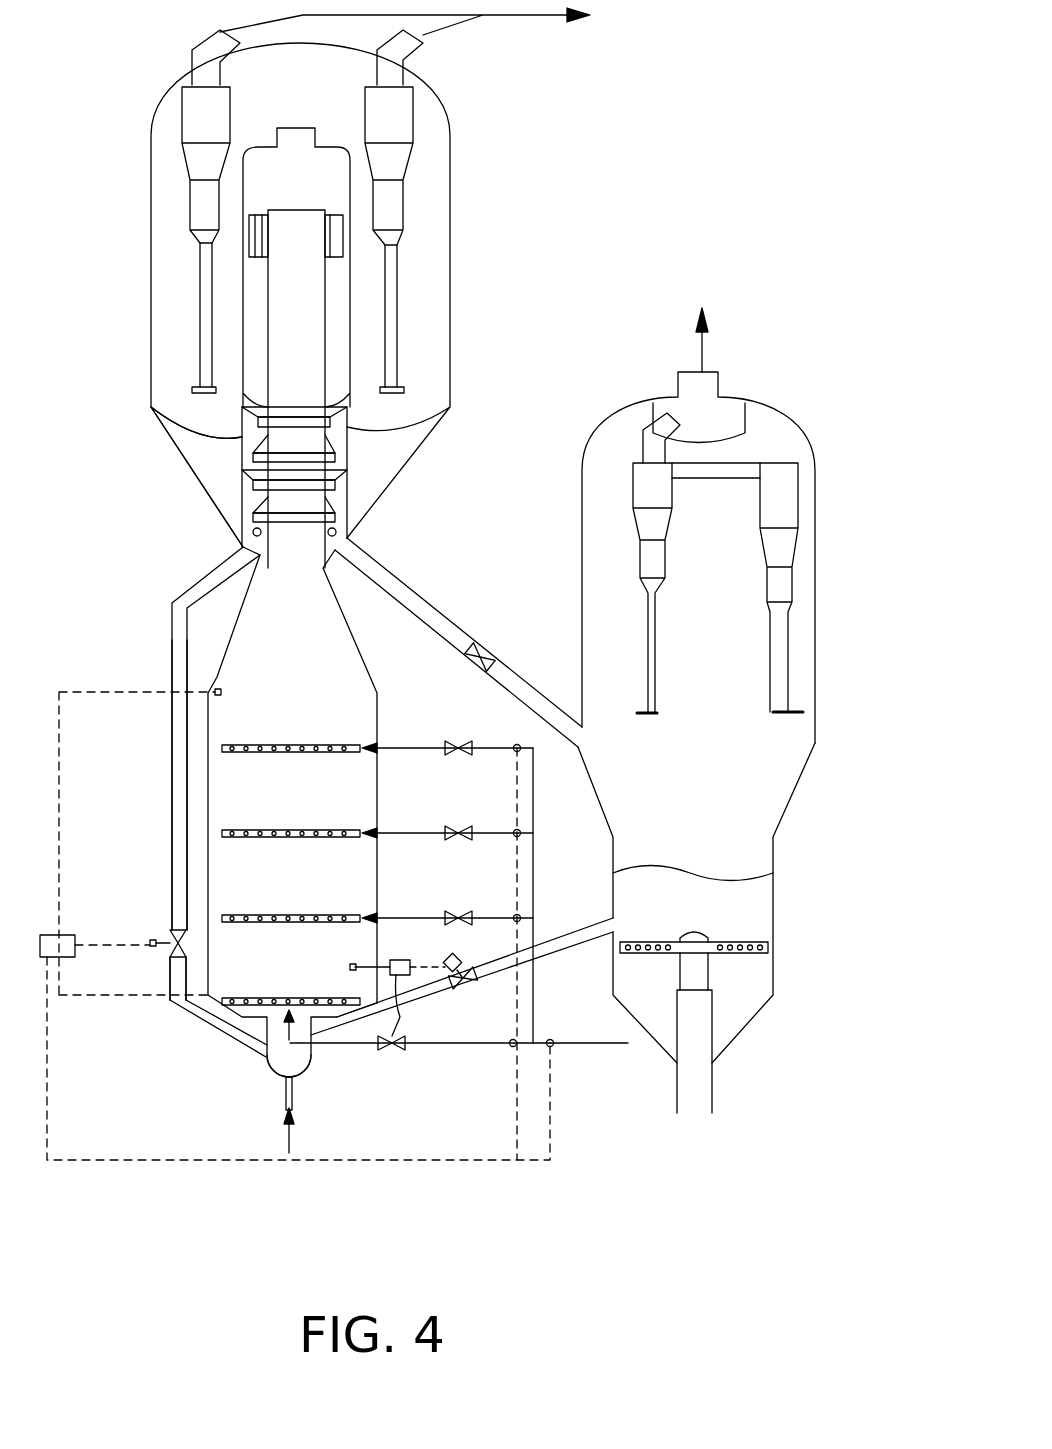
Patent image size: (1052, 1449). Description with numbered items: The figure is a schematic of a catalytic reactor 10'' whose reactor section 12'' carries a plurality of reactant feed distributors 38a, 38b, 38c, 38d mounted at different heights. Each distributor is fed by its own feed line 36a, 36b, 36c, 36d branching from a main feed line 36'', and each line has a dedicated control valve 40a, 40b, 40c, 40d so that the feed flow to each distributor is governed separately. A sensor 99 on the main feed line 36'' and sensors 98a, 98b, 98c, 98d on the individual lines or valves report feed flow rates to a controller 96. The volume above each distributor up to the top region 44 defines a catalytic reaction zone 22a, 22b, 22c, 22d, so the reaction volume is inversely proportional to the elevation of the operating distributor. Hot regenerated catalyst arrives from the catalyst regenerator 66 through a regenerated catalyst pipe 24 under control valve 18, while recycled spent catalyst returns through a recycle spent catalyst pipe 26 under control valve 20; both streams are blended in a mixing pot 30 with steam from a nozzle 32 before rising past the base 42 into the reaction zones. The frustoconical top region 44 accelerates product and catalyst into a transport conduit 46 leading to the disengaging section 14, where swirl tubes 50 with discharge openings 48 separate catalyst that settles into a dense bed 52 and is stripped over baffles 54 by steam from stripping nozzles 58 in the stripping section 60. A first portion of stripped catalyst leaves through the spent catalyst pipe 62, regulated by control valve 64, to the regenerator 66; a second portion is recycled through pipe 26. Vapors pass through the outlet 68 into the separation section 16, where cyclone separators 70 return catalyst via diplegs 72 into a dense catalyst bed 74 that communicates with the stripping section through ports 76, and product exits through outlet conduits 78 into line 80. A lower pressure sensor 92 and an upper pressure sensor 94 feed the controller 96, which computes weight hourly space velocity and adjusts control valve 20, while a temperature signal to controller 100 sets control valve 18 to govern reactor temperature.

The catalytic reactor 10'' is at (124, 550).
The reactor section 12'' is at (222, 812).
The disengaging section 14 is at (337, 338).
The separation section 16 is at (432, 188).
The control valve 18 is at (456, 956).
The control valve 20 is at (173, 943).
The catalytic reaction zone 22a is at (288, 963).
The catalytic reaction zone 22b is at (288, 872).
The catalytic reaction zone 22c is at (283, 807).
The catalytic reaction zone 22d is at (292, 728).
The regenerated catalyst pipe 24 is at (562, 938).
The recycle spent catalyst pipe 26 is at (180, 747).
The mixing pot 30 is at (283, 1063).
The nozzle 32 is at (287, 1095).
The feed line 36a is at (420, 1045).
The feed line 36b is at (411, 918).
The feed line 36c is at (419, 833).
The feed line 36d is at (407, 747).
The main feed line 36'' is at (592, 1079).
The reactant feed distributor 38a is at (340, 998).
The reactant feed distributor 38b is at (343, 918).
The reactant feed distributor 38c is at (338, 833).
The reactant feed distributor 38d is at (327, 748).
The control valve 40a is at (390, 1048).
The control valve 40b is at (450, 918).
The control valve 40c is at (449, 833).
The control valve 40d is at (447, 747).
The base 42 is at (240, 1016).
The top region 44 is at (262, 646).
The transport conduit 46 is at (293, 328).
The discharge openings 48 is at (338, 238).
The swirl tubes 50 is at (255, 258).
The dense bed 52 is at (338, 398).
The baffles 54 is at (312, 442).
The stripping nozzles 58 is at (253, 533).
The stripping section 60 is at (342, 498).
The spent catalyst pipe 62 is at (420, 610).
The control valve 64 is at (482, 655).
The catalyst regenerator 66 is at (830, 781).
The outlet 68 is at (290, 128).
The cyclone separator 70 is at (197, 118).
The dipleg 72 is at (388, 328).
The dense catalyst bed 74 is at (185, 428).
The ports 76 is at (240, 437).
The outlet conduits 78 is at (192, 58).
The line 80 is at (525, 18).
The pressure sensor 92 is at (173, 1007).
The pressure sensor 94 is at (218, 690).
The controller 96 is at (80, 933).
The sensor 98a is at (512, 1046).
The sensor 98b is at (514, 916).
The sensor 98c is at (518, 830).
The sensor 98d is at (516, 745).
The sensor 99 is at (552, 1040).
The controller 100 is at (401, 1017).